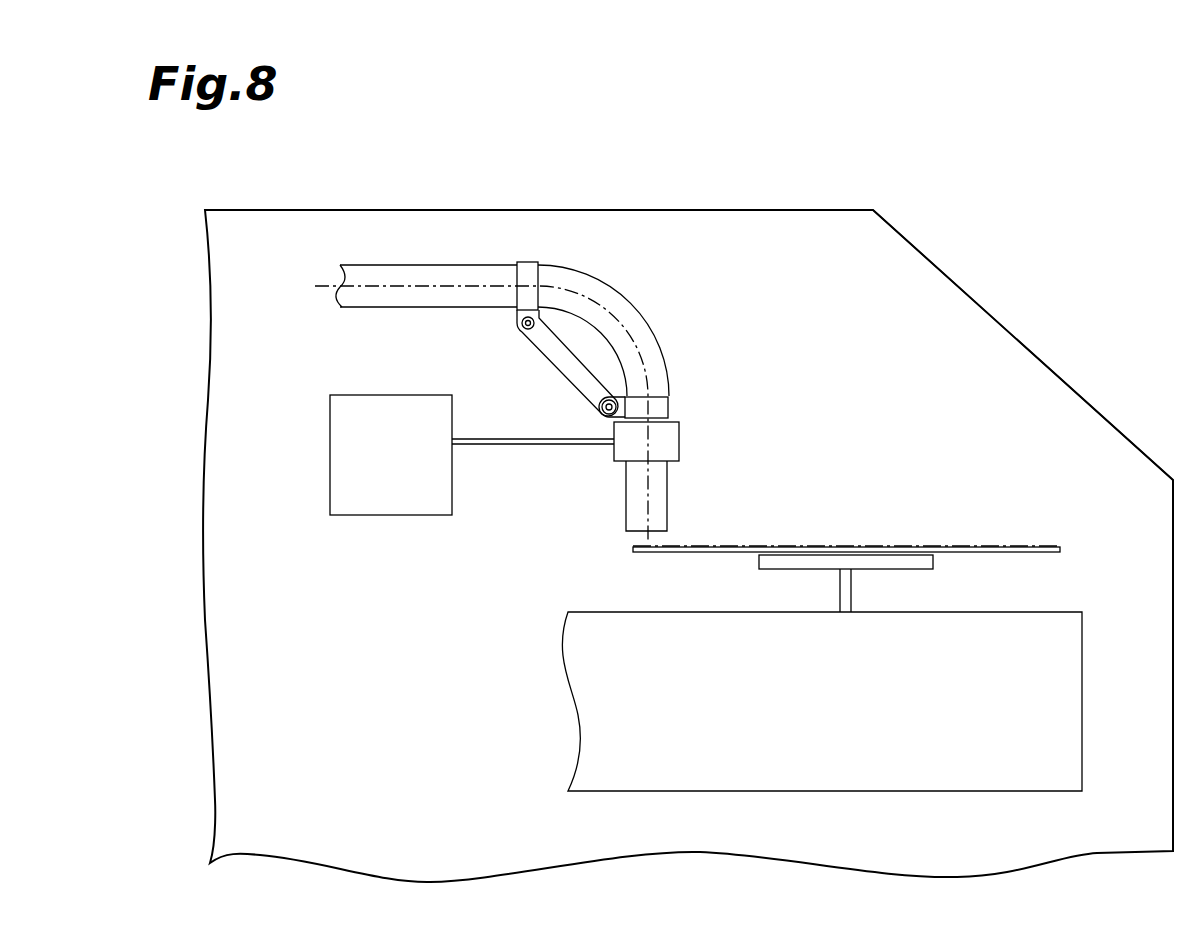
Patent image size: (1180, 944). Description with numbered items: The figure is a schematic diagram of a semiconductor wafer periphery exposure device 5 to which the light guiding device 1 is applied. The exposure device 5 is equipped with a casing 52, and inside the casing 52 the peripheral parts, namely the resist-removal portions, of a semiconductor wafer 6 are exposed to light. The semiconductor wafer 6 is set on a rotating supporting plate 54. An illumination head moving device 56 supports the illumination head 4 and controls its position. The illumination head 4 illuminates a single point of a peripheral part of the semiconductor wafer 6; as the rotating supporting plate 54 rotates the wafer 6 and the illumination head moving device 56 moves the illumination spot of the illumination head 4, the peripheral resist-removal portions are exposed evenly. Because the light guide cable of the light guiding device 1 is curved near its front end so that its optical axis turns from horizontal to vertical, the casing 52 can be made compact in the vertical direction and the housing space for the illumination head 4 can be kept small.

The light guiding device 1 is at (660, 325).
The illumination head 4 is at (681, 438).
The semiconductor wafer periphery exposure device 5 is at (994, 304).
The semiconductor wafer 6 is at (977, 545).
The casing 52 is at (444, 210).
The rotating supporting plate 54 is at (933, 562).
The illumination head moving device 56 is at (386, 497).